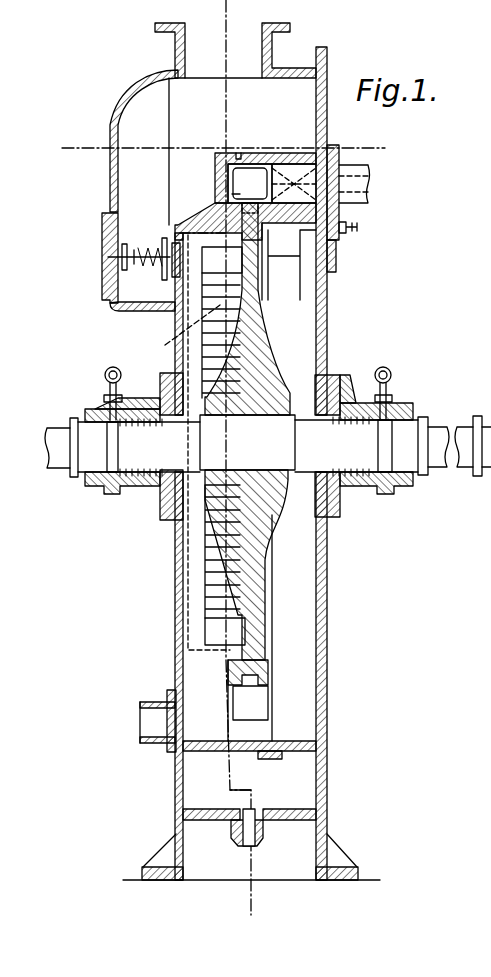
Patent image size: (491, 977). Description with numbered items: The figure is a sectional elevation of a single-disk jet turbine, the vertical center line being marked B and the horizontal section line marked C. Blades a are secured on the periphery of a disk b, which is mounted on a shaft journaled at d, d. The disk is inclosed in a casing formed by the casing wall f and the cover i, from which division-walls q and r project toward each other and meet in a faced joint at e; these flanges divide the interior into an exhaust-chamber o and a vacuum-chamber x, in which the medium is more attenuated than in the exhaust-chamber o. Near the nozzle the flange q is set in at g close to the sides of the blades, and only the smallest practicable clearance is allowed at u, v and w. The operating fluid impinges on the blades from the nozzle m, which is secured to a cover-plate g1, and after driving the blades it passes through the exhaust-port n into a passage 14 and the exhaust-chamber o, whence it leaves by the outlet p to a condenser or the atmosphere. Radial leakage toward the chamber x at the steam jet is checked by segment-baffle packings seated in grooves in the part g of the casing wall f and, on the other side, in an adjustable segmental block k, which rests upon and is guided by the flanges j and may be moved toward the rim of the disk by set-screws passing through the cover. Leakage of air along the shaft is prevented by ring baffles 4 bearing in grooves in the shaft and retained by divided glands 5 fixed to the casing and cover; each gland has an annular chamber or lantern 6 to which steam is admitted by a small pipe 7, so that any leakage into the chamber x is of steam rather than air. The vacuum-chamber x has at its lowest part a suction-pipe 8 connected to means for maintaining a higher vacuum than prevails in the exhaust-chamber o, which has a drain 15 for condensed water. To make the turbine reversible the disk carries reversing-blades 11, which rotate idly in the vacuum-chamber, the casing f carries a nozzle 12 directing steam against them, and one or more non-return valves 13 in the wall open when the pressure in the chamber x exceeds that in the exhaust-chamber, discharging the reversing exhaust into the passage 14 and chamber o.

The outlet p is at (213, 42).
The section line B- B is at (250, 459).
The section line C- C is at (233, 148).
The exhaust-chamber o is at (189, 431).
The passage 14 is at (149, 151).
The non-return valves 13 is at (144, 271).
The faced joint e is at (288, 157).
The clearance v is at (239, 154).
The clearance w is at (250, 183).
The blades a is at (258, 158).
The division-wall r is at (324, 150).
The nozzle m is at (360, 184).
The set-in part of flange g is at (215, 222).
The clearance u is at (232, 176).
The exhaust-port n is at (232, 192).
The cover-plate g1 is at (336, 212).
The flanges j is at (336, 254).
The adjustable segmental block k is at (272, 243).
The cover i is at (327, 294).
The casing wall f is at (175, 593).
The reversing-blades 11 is at (223, 446).
The reversing nozzle 12 is at (180, 334).
The disk b is at (262, 350).
The journals d is at (440, 440).
The annular chamber or lantern 6 is at (112, 488).
The divided glands 5 is at (158, 406).
The ring baffles 4 is at (165, 490).
The small pipe 7 is at (105, 377).
The suction-pipe 8 is at (160, 740).
The vacuum-chamber x is at (242, 752).
The division-wall q is at (249, 788).
The drain 15 is at (262, 840).